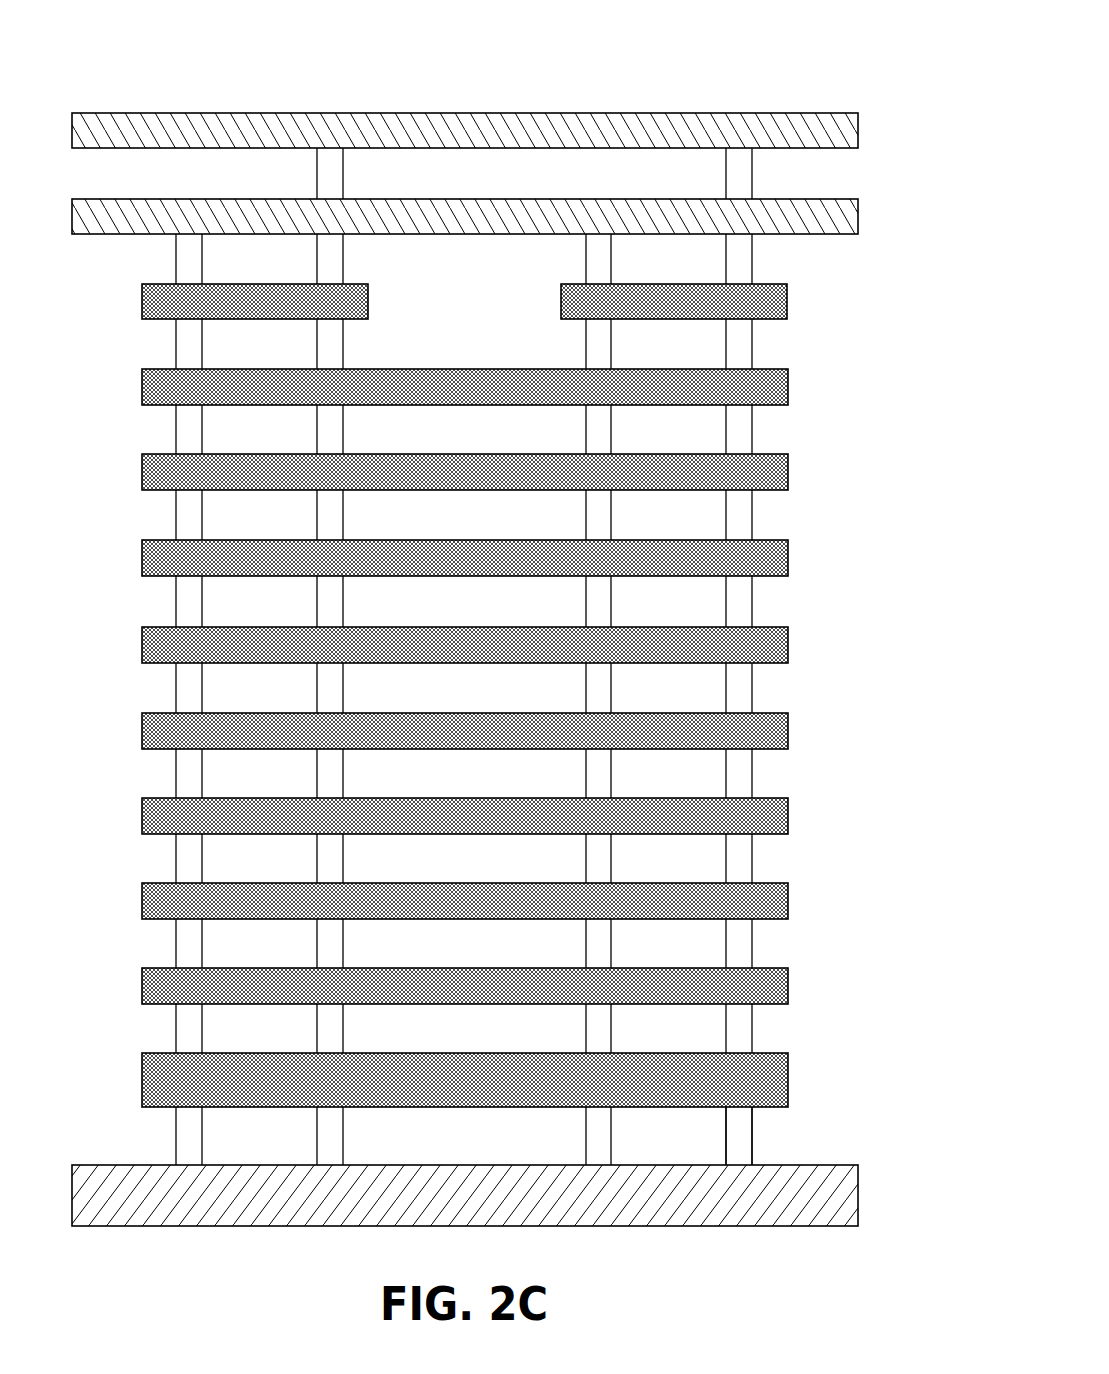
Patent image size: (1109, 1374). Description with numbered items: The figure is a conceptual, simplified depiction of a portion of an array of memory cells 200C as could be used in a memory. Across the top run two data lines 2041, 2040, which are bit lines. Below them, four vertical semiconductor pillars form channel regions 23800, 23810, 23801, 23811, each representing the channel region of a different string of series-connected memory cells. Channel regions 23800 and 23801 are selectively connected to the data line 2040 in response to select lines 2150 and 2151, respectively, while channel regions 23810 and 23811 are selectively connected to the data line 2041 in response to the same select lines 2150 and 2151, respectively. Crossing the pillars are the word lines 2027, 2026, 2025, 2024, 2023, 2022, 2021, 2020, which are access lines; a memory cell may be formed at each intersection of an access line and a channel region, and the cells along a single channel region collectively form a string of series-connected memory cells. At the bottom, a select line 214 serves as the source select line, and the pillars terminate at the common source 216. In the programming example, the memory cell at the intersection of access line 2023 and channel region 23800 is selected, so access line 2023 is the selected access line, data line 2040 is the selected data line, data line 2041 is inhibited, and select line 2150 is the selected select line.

The array of memory cells 200C is at (727, 74).
The data line 2041 is at (207, 113).
The data line 2040 is at (822, 199).
The channel region 23800 is at (175, 270).
The channel region 23810 is at (343, 255).
The channel region 23801 is at (586, 270).
The channel region 23811 is at (755, 1140).
The select line 2150 is at (142, 300).
The select line 2151 is at (788, 304).
The word line 2027 is at (142, 385).
The word line 2026 is at (142, 470).
The word line 2025 is at (142, 556).
The word line 2024 is at (142, 643).
The word line 2023 is at (142, 729).
The word line 2022 is at (142, 814).
The word line 2021 is at (142, 899).
The word line 2020 is at (142, 984).
The select line 214 is at (142, 1078).
The common source 216 is at (118, 1165).